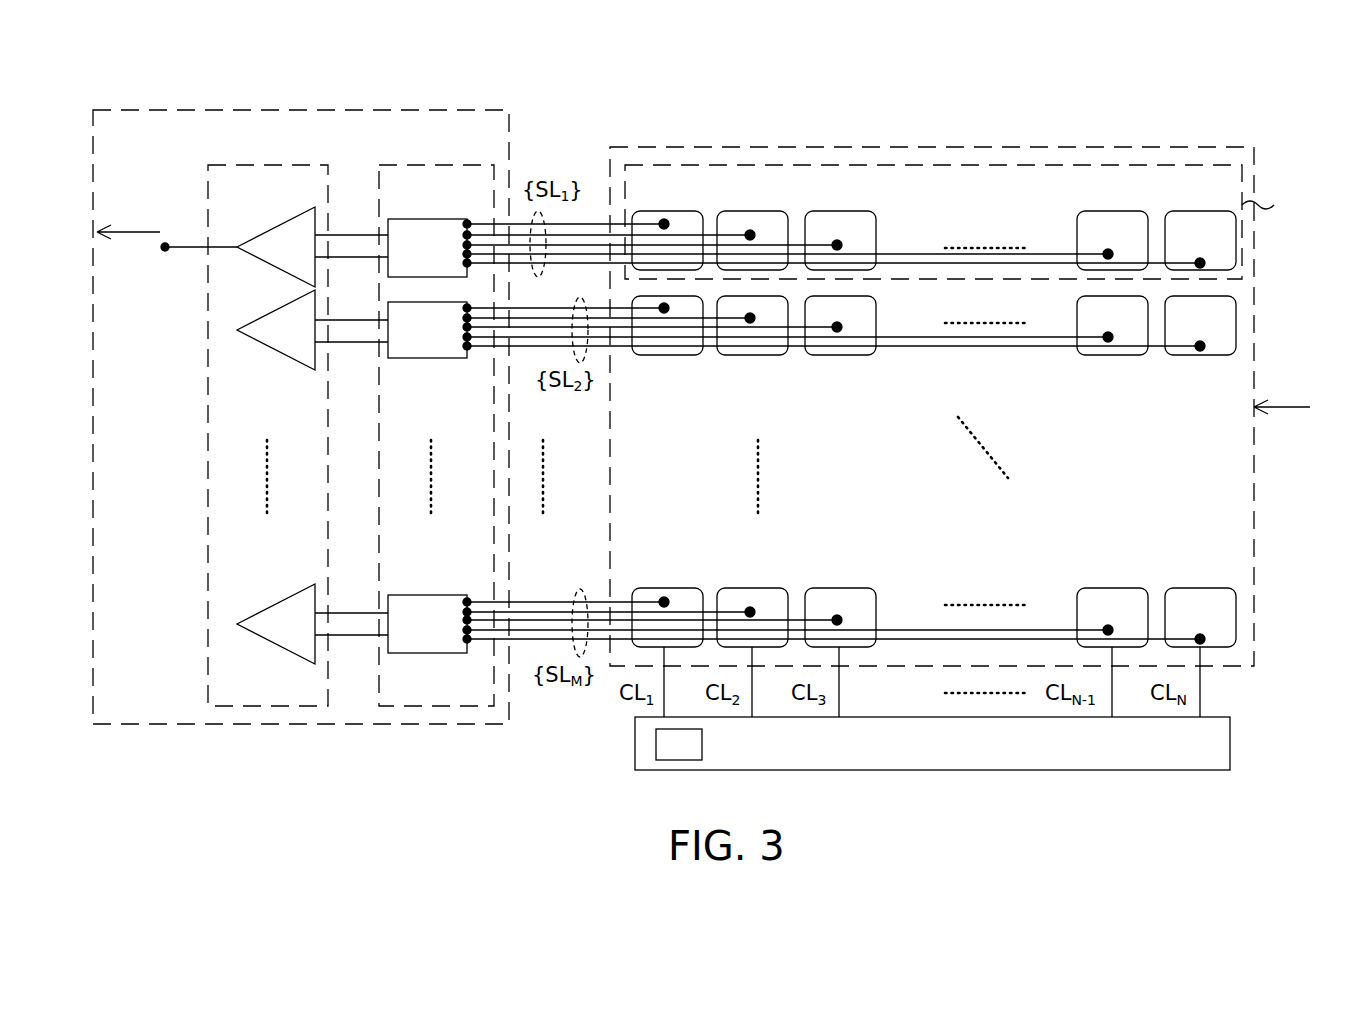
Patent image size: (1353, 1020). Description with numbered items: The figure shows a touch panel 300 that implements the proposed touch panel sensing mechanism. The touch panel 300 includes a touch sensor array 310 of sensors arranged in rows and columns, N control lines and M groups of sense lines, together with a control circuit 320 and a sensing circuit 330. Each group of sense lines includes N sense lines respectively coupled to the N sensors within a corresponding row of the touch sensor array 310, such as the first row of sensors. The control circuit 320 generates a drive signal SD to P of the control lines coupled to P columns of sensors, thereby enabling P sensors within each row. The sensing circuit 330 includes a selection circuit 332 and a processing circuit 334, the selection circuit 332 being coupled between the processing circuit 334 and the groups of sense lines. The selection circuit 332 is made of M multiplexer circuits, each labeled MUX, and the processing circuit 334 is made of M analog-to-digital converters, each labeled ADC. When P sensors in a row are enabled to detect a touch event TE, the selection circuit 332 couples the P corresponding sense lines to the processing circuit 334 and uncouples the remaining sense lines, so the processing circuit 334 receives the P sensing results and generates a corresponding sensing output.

The touch panel 300 is at (1100, 104).
The touch sensor array 310 is at (1182, 147).
The control circuit 320 is at (1170, 770).
The sensing circuit 330 is at (473, 110).
The selection circuit 332 is at (418, 165).
The processing circuit 334 is at (248, 165).